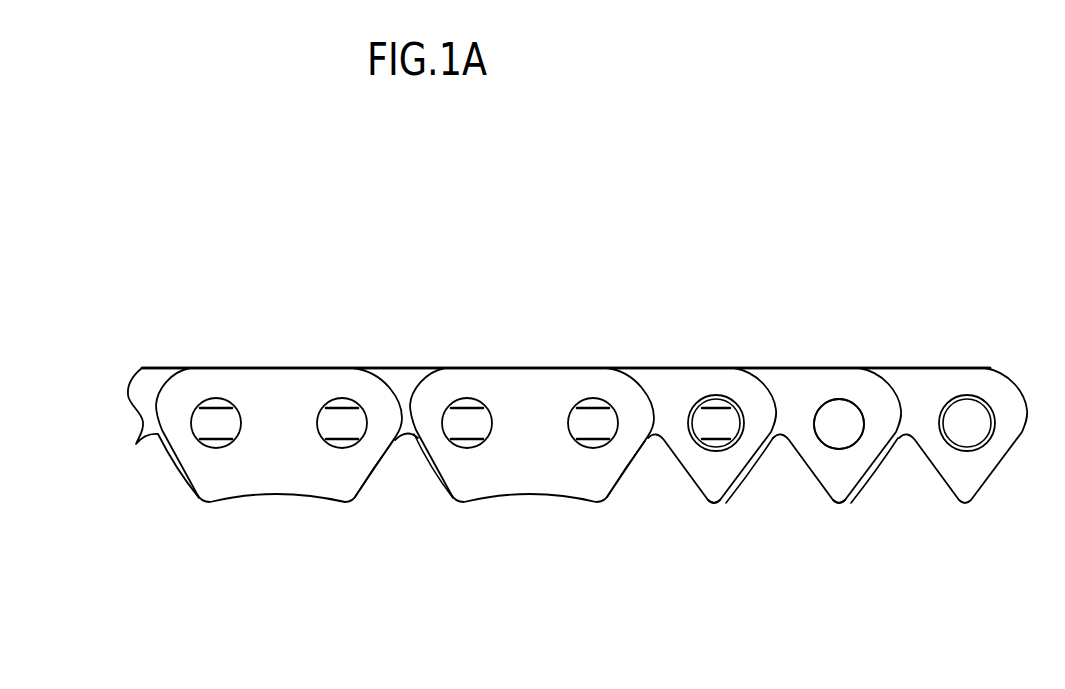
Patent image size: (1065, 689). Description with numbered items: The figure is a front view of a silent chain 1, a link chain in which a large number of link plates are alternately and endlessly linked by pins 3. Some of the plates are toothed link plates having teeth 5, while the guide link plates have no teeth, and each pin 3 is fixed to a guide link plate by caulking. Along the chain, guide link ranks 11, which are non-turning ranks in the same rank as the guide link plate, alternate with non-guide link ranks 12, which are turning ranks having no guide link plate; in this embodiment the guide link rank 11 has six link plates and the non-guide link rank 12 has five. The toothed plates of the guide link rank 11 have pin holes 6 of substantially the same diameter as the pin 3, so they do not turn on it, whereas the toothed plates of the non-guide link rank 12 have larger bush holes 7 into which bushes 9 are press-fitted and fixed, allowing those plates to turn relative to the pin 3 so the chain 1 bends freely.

The silent chain 1 is at (548, 237).
The guide link rank 11 is at (480, 355).
The non-guide link rank 12 is at (707, 353).
The pin 3 is at (214, 425).
The tooth 5 is at (717, 485).
The pin hole 6 is at (853, 421).
The bush hole 7 is at (694, 416).
The bush 9 is at (721, 392).